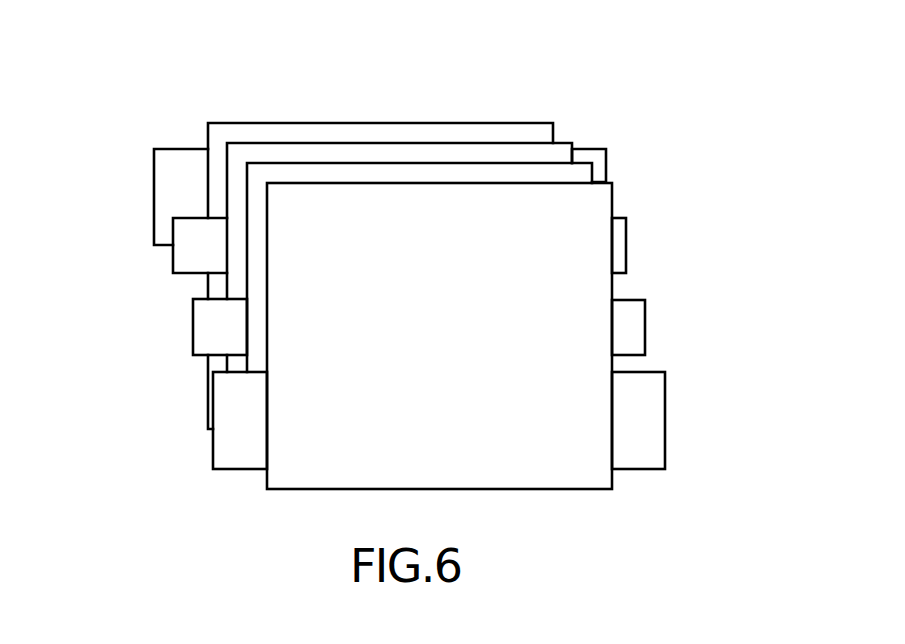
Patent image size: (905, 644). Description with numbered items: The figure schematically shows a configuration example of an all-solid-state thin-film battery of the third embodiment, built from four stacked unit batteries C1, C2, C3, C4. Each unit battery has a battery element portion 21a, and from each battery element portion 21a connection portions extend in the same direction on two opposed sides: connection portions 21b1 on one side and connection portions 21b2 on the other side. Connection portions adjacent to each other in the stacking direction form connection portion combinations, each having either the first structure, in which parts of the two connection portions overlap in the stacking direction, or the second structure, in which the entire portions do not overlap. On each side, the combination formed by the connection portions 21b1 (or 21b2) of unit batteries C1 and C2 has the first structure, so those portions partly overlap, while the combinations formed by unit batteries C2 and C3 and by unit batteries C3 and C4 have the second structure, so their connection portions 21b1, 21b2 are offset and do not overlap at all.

The battery element portion 21a is at (411, 297).
The connection portion 21b1 is at (172, 167).
The connection portion 21b2 is at (606, 161).
The unit battery C1 is at (257, 133).
The unit battery C2 is at (300, 150).
The unit battery C3 is at (341, 168).
The unit battery C4 is at (379, 192).